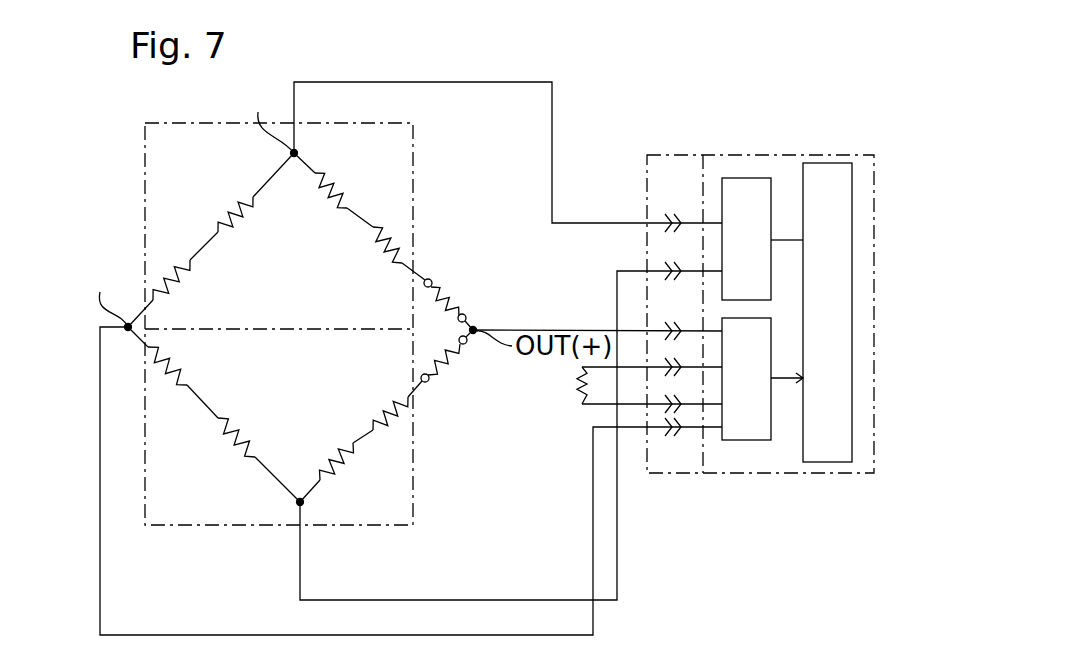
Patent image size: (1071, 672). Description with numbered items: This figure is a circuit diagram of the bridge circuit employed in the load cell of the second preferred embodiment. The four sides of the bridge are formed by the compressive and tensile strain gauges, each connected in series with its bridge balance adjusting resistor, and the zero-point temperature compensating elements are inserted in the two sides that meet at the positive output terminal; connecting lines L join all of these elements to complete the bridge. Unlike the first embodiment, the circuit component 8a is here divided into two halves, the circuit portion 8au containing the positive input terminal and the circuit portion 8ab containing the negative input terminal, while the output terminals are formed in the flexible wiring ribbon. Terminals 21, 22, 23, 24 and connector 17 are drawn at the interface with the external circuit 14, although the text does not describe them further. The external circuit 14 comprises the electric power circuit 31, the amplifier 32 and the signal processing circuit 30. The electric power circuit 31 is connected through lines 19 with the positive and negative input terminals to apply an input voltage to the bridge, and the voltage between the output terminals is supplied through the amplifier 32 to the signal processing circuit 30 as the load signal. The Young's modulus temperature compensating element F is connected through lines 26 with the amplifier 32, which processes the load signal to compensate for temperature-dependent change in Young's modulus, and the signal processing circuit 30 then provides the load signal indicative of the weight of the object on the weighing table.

The external circuit 14 is at (760, 311).
The connector 17 is at (676, 153).
The lines 19 is at (108, 330).
The terminal E1 21 is at (428, 279).
The terminal 22 is at (466, 318).
The terminal E2 23 is at (426, 382).
The terminal 24 is at (466, 344).
The lines 26 is at (607, 368).
The signal processing circuit 30 is at (830, 462).
The electric power circuit 31 is at (745, 178).
The amplifier 32 is at (742, 440).
The circuit component 8a is at (477, 262).
The circuit portion 8au is at (414, 150).
The circuit portion 8ab is at (413, 363).
The Young's modulus temperature compensating element F is at (582, 397).
The connecting lines L is at (205, 240).